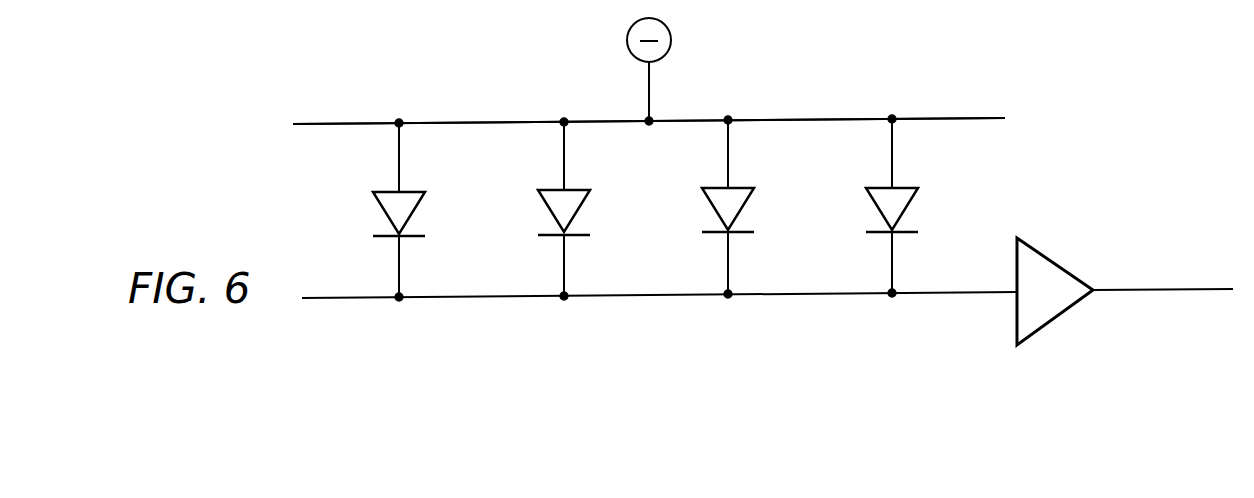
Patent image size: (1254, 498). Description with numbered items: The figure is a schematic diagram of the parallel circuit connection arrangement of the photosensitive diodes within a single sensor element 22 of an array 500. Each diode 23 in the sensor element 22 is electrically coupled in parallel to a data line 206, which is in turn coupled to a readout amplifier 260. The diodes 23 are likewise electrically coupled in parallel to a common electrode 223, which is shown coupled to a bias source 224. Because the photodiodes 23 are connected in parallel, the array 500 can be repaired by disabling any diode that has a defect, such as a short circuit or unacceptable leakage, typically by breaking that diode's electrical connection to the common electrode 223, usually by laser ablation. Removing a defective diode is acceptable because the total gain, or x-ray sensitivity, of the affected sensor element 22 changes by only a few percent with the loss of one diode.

The array 500 is at (293, 108).
The sensor element 22 is at (285, 194).
The common electrode 223 is at (480, 122).
The bias source 224 is at (671, 36).
The diode 23 is at (548, 213).
The data line 206 is at (657, 296).
The readout amplifier 260 is at (1050, 258).